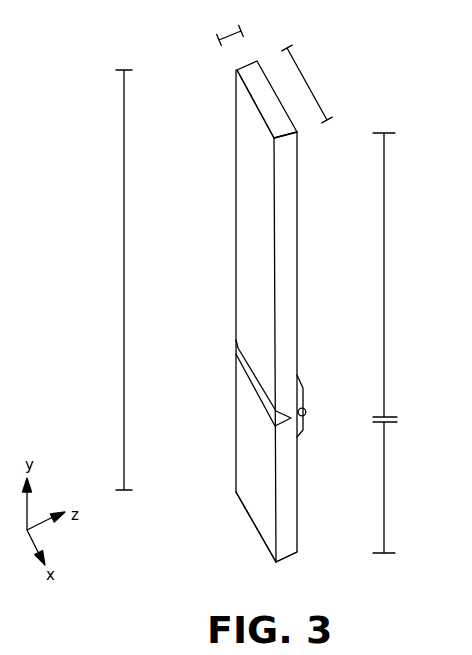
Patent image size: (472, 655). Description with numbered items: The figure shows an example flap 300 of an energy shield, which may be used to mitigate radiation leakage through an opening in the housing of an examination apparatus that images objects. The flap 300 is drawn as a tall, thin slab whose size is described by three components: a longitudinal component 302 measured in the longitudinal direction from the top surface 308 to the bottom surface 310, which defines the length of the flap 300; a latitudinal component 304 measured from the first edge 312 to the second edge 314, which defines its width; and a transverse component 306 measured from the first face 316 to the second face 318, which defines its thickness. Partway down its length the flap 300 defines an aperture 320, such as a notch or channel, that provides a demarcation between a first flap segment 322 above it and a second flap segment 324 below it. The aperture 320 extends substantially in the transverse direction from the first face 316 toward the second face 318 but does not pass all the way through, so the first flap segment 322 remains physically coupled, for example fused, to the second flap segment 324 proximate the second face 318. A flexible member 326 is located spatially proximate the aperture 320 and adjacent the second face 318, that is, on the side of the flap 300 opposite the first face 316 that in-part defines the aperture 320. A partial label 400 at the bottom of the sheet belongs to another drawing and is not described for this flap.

The flap 300 is at (138, 32).
The longitudinal component 302 is at (123, 268).
The latitudinal component 304 is at (303, 80).
The transverse component 306 is at (225, 29).
The top surface 308 is at (263, 93).
The bottom surface 310 is at (251, 551).
The first edge 312 is at (284, 163).
The second edge 314 is at (222, 193).
The first face 316 is at (240, 161).
The second face 318 is at (308, 215).
The aperture 320 is at (224, 347).
The first flap segment 322 is at (384, 268).
The second flap segment 324 is at (385, 492).
The flexible member 326 is at (304, 385).
The beam 400 is at (325, 652).